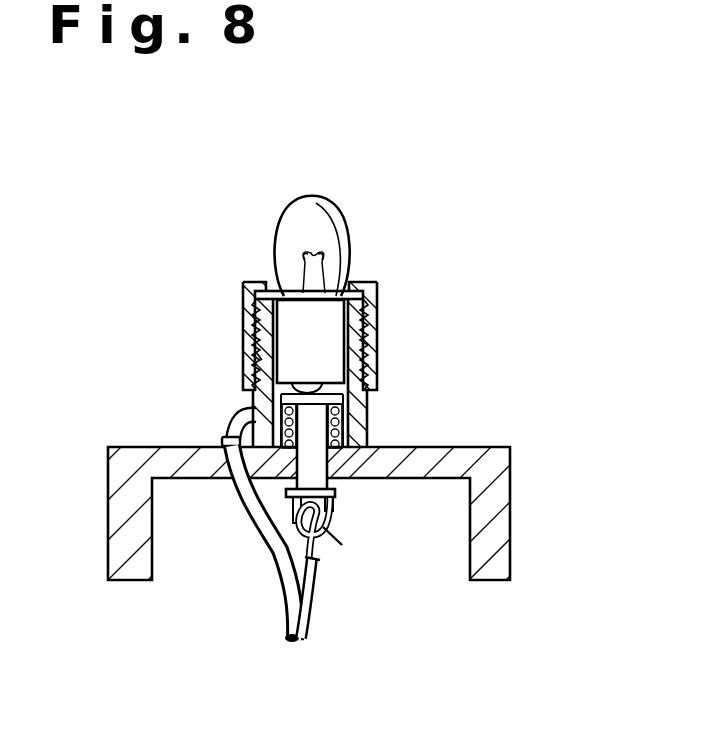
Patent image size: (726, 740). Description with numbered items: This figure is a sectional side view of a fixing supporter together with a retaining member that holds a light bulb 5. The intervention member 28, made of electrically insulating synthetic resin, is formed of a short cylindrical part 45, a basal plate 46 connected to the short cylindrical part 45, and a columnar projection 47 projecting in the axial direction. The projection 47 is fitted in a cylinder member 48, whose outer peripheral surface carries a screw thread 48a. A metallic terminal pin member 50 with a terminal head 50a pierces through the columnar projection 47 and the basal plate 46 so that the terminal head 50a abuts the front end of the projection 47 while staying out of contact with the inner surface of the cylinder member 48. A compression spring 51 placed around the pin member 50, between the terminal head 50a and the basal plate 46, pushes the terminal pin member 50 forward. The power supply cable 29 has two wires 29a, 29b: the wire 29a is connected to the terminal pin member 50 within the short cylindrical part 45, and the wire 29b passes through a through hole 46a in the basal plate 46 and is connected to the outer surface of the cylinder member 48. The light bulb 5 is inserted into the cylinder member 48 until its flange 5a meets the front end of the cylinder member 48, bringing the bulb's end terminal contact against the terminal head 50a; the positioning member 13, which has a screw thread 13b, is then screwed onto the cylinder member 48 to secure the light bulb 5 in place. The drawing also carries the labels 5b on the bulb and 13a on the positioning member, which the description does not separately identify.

The light bulb 5 is at (352, 221).
The flange 5a is at (328, 288).
The glass bulb 5b is at (331, 212).
The positioning member 13 is at (240, 277).
The socket flange plate 13a is at (263, 288).
The male screw thread 13b is at (252, 312).
The intervention member 28 is at (512, 437).
The power supply cable 29 is at (304, 623).
The wire 29a is at (320, 556).
The wire 29b is at (236, 417).
The short cylindrical part 45 is at (502, 522).
The basal plate 46 is at (460, 458).
The through hole 46a is at (223, 478).
The columnar projection 47 is at (350, 416).
The cylinder member 48 is at (368, 402).
The male screw thread 48a is at (366, 330).
The terminal pin member 50 is at (292, 431).
The terminal head 50a is at (258, 357).
The compression spring 51 is at (362, 448).